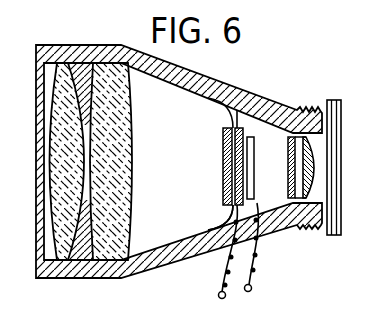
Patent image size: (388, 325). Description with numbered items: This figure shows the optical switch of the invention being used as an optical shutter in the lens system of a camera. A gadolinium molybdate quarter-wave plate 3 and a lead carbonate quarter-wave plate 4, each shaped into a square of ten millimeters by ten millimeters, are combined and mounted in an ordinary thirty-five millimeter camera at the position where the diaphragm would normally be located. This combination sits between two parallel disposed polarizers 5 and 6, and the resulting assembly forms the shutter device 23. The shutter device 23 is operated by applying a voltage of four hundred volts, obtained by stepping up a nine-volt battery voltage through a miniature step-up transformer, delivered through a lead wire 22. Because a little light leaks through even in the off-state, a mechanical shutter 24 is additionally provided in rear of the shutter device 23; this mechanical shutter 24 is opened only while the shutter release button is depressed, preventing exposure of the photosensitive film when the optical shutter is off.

The Gd2(MoO4)3 (λ/4)-plate 3 is at (250, 137).
The PbCO3 (λ/4)-plate 4 is at (222, 137).
The polarizer 5 is at (44, 238).
The polarizer 6 is at (288, 223).
The lead wire 22 is at (251, 289).
The shutter device 23 is at (220, 217).
The mechanical shutter 24 is at (338, 206).